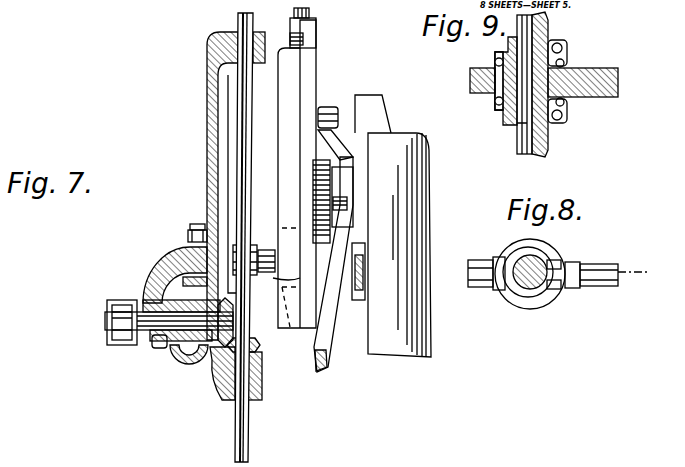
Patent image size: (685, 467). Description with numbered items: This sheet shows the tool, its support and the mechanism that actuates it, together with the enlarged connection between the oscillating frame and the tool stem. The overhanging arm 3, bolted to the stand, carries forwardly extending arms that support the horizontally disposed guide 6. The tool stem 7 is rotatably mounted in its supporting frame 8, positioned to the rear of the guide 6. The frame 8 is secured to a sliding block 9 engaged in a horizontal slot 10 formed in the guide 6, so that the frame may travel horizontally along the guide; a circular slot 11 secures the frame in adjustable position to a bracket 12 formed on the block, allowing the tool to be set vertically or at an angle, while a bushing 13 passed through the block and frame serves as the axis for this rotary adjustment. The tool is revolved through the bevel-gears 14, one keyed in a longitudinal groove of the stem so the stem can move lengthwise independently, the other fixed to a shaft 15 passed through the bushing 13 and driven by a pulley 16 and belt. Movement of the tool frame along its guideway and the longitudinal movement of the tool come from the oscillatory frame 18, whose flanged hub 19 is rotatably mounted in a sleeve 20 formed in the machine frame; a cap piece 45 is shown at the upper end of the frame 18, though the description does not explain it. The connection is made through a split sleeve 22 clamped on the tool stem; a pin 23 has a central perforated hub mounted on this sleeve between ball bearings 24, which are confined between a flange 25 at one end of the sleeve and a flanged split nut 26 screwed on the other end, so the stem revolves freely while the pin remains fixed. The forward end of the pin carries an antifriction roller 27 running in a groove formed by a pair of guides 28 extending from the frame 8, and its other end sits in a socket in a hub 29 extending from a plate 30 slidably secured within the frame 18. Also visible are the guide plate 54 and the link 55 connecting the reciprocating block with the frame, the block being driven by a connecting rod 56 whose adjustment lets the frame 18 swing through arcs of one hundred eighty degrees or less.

In FIG. 7, the overhanging arm 3 is at (424, 222).
In FIG. 7, the guide 6 is at (180, 275).
In FIG. 7, the tool stem 7 is at (249, 437).
In FIG. 7, the supporting frame 8 is at (207, 153).
In FIG. 7, the sliding block 9 is at (185, 350).
In FIG. 8, the sliding block 9 is at (633, 286).
In FIG. 7, the horizontal slot 10 is at (198, 352).
In FIG. 7, the circular slot 11 is at (204, 230).
In FIG. 7, the bracket 12 is at (197, 262).
In FIG. 7, the bushing 13 is at (156, 347).
In FIG. 7, the bevel-gears 14 is at (233, 313).
In FIG. 7, the shaft 15 is at (150, 300).
In FIG. 7, the pulley 16 is at (125, 326).
In FIG. 7, the oscillatory frame 18 is at (313, 77).
In FIG. 7, the flanged hub 19 is at (318, 243).
In FIG. 7, the sleeve 20 is at (345, 201).
In FIG. 7, the split sleeve 22 is at (253, 244).
In FIG. 9, the split sleeve 22 is at (508, 43).
In FIG. 8, the split sleeve 22 is at (523, 256).
In FIG. 9, the pin 23 is at (577, 92).
In FIG. 8, the pin 23 is at (598, 266).
In FIG. 9, the ball bearings 24 is at (564, 63).
In FIG. 9, the flange 25 is at (498, 57).
In FIG. 8, the flange 25 is at (508, 298).
In FIG. 9, the flanged split nut 26 is at (503, 123).
In FIG. 7, the antifriction roller 27 is at (190, 236).
In FIG. 9, the antifriction roller 27 is at (477, 93).
In FIG. 8, the antifriction roller 27 is at (480, 288).
In FIG. 7, the guides 28 is at (222, 128).
In FIG. 7, the hub 29 is at (300, 278).
In FIG. 7, the plate 30 is at (289, 333).
In FIG. 7, the cap nut 45 is at (303, 40).
In FIG. 7, the guide plate 54 is at (370, 118).
In FIG. 7, the link 55 is at (338, 133).
In FIG. 7, the connecting rod 56 is at (328, 356).